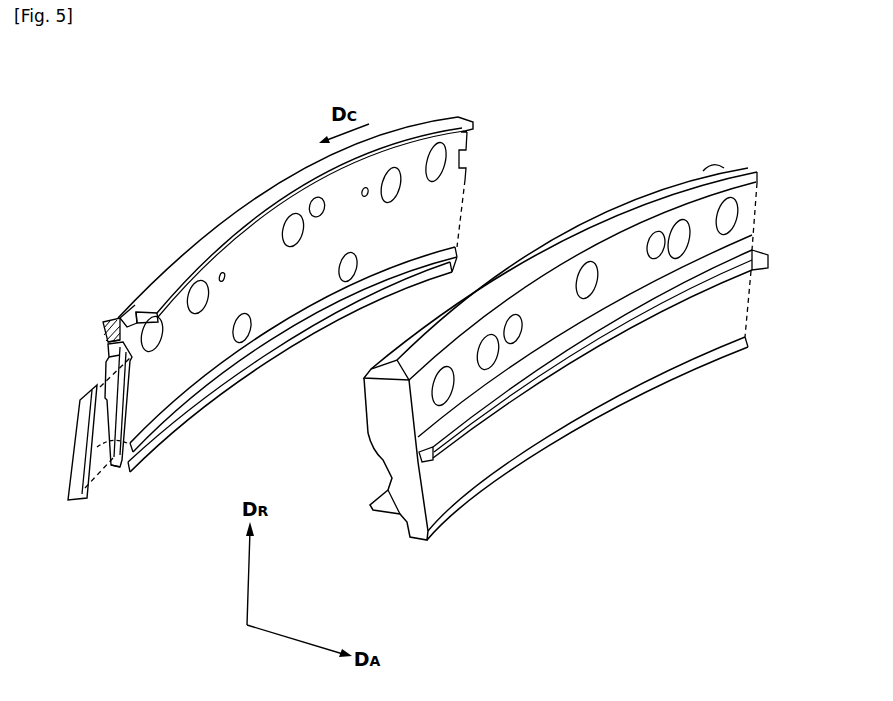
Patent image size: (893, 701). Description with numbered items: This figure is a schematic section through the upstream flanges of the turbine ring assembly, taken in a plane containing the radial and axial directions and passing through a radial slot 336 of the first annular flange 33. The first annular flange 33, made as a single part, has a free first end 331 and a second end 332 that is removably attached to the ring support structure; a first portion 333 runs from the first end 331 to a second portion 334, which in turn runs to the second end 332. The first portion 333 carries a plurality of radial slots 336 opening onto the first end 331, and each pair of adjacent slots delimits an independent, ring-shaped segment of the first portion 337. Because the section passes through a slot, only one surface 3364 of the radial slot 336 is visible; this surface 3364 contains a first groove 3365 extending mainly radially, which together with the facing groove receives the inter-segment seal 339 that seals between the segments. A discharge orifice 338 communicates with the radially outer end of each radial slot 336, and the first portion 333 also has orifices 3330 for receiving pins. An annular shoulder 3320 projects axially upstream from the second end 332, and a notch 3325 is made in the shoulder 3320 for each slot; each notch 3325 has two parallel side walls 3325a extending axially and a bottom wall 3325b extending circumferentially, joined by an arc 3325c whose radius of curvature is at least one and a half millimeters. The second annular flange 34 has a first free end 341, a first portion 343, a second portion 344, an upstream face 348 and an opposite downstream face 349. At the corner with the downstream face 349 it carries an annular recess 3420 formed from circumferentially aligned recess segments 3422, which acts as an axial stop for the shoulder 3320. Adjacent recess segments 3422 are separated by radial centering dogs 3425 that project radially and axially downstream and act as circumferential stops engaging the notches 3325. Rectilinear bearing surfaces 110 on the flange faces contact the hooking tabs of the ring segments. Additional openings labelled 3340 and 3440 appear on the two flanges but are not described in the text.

The first annular flange 33 is at (280, 315).
The second end 332 is at (270, 186).
The annular shoulder 3320 is at (240, 243).
The notch 3325 is at (145, 307).
The side walls 3325a is at (140, 314).
The bottom wall 3325b is at (121, 313).
The arc 3325c is at (133, 301).
The orifices 3330 is at (342, 273).
The through holes 3340 is at (445, 163).
The second portion 334 is at (128, 325).
The radial slot 336 is at (130, 420).
The segment of the first portion 337 is at (262, 363).
The discharge orifice 338 is at (106, 346).
The inter-segment seal 339 is at (77, 447).
The rectilinear bearing surfaces 110 is at (135, 456).
The surface of the radial slot 3364 is at (117, 470).
The first groove 3365 is at (89, 422).
The first end 331 is at (318, 330).
The first portion 333 is at (190, 392).
The second annular flange 34 is at (545, 365).
The annular recess 3420 is at (578, 224).
The recess segments 3422 is at (549, 240).
The radial centering dogs 3425 is at (717, 170).
The through holes of second segment 3440 is at (737, 216).
The first free end 341 is at (420, 545).
The first portion 343 is at (400, 524).
The second portion 344 is at (373, 452).
The upstream face 348 is at (562, 402).
The downstream face 349 is at (361, 416).